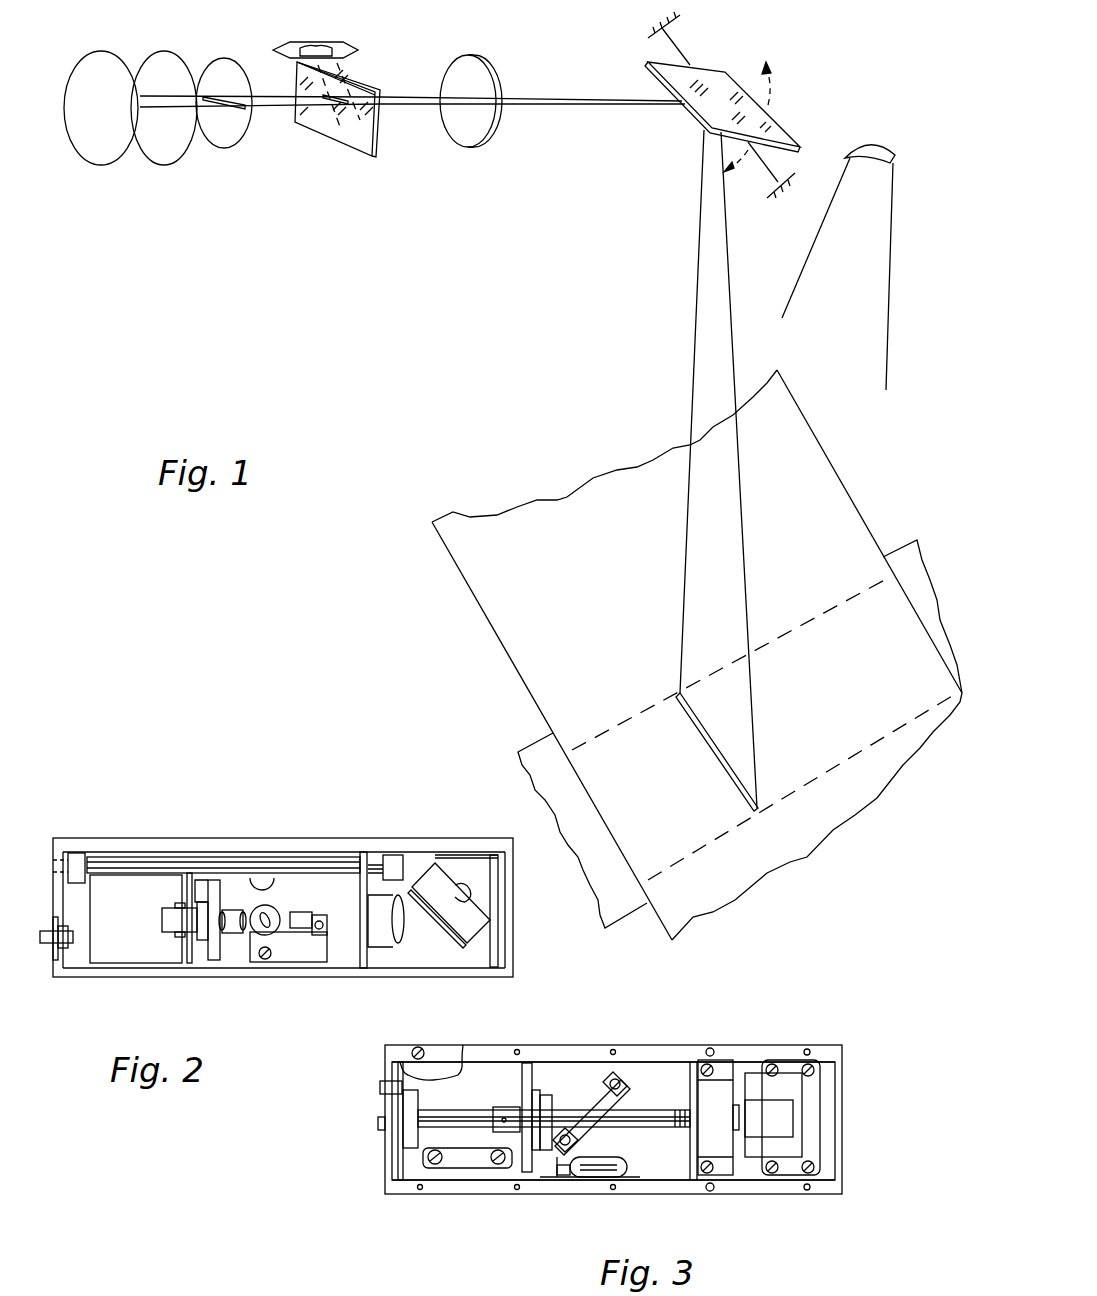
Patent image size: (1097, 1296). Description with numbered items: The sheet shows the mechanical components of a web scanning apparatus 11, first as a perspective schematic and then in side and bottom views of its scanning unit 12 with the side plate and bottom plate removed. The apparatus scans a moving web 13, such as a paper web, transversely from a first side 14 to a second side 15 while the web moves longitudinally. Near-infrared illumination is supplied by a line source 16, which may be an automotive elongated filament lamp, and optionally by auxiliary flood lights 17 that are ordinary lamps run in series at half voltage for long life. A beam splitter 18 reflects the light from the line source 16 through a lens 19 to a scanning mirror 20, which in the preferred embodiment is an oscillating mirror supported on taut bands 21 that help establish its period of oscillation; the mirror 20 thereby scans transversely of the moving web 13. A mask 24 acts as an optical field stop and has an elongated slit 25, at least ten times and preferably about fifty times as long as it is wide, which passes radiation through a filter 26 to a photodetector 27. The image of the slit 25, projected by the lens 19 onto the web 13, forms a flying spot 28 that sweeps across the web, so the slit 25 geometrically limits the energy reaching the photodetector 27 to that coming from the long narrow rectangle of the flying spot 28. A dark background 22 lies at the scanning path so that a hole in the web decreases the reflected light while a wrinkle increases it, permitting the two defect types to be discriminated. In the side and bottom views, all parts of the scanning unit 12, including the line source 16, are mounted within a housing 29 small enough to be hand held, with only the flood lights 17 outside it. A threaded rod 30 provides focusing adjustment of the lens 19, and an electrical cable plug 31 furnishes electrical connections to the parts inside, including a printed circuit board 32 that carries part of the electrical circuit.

In FIG. 1, the web scanning apparatus 11 is at (450, 302).
In FIG. 2, the scanning unit 12 is at (262, 830).
In FIG. 3, the scanning unit 12 is at (648, 1044).
In FIG. 1, the moving web 13 is at (660, 572).
In FIG. 1, the first side 14 is at (446, 567).
In FIG. 1, the second side 15 is at (830, 463).
In FIG. 1, the line source 16 is at (317, 42).
In FIG. 2, the line source 16 is at (230, 910).
In FIG. 3, the line source 16 is at (590, 1172).
In FIG. 1, the auxiliary flood lights 17 is at (873, 138).
In FIG. 1, the beam splitter 18 is at (326, 126).
In FIG. 2, the beam splitter 18 is at (275, 915).
In FIG. 3, the beam splitter 18 is at (605, 1098).
In FIG. 1, the lens 19 is at (488, 64).
In FIG. 2, the lens 19 is at (400, 918).
In FIG. 1, the scanning mirror 20 is at (712, 82).
In FIG. 2, the scanning mirror 20 is at (442, 935).
In FIG. 3, the scanning mirror 20 is at (763, 1130).
In FIG. 1, the taut bands 21 is at (678, 50).
In FIG. 1, the dark background 22 is at (900, 555).
In FIG. 1, the mask 24 is at (222, 63).
In FIG. 3, the mask 24 is at (545, 1090).
In FIG. 1, the elongated slit 25 is at (240, 110).
In FIG. 1, the filter 26 is at (155, 65).
In FIG. 2, the filter 26 is at (200, 935).
In FIG. 3, the filter 26 is at (528, 1088).
In FIG. 1, the photodetector 27 is at (94, 73).
In FIG. 2, the photodetector 27 is at (162, 918).
In FIG. 3, the photodetector 27 is at (500, 1107).
In FIG. 1, the flying spot 28 is at (702, 738).
In FIG. 3, the housing 29 is at (758, 1045).
In FIG. 2, the threaded rod 30 is at (120, 860).
In FIG. 3, the threaded rod 30 is at (658, 1110).
In FIG. 2, the electrical cable plug 31 is at (47, 950).
In FIG. 3, the electrical cable plug 31 is at (380, 1081).
In FIG. 2, the printed circuit board 32 is at (127, 958).
In FIG. 3, the printed circuit board 32 is at (465, 1170).